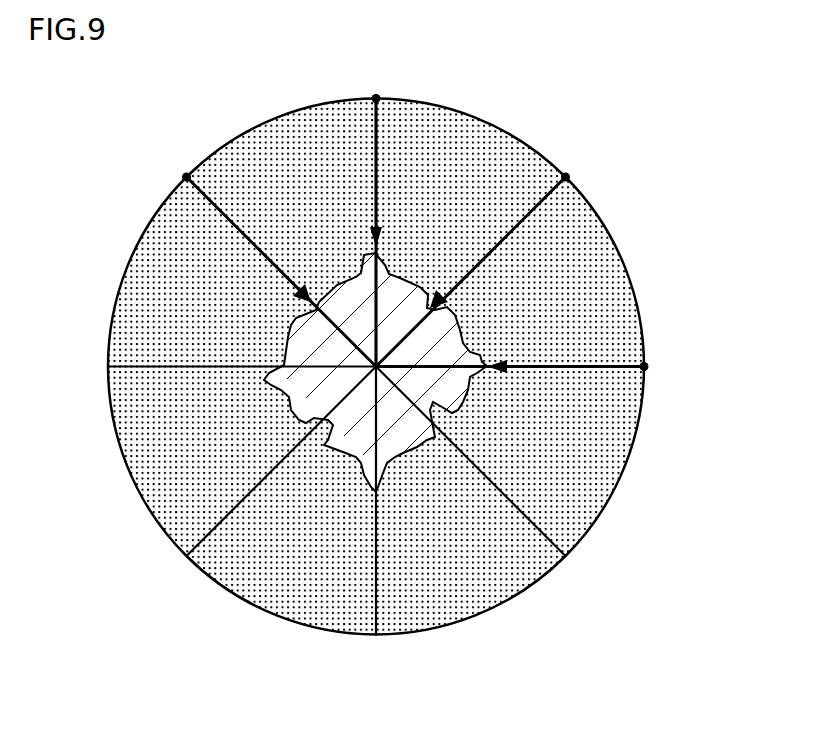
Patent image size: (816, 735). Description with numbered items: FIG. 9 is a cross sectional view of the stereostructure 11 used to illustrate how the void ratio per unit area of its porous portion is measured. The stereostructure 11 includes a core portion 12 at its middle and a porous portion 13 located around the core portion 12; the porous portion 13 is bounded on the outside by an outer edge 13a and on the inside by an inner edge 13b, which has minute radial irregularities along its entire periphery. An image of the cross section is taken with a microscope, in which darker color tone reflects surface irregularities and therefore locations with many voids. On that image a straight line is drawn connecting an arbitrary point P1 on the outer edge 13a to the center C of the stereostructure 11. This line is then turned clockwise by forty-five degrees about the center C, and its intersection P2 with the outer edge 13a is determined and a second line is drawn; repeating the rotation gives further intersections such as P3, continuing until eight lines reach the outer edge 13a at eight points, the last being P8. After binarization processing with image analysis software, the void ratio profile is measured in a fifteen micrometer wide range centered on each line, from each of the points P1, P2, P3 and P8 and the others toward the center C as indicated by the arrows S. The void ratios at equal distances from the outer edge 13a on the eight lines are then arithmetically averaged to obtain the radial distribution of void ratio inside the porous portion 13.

The stereostructure 11 is at (652, 503).
The core portion 12 is at (397, 432).
The porous portion 13 is at (570, 490).
The outer edge 13a is at (468, 111).
The inner edge 13b is at (284, 338).
The arrows S is at (376, 150).
The arbitrary point P1 is at (378, 90).
The intersection P2 is at (566, 172).
The intersection P3 is at (649, 366).
The intersection P8 is at (185, 171).
The center C is at (372, 368).